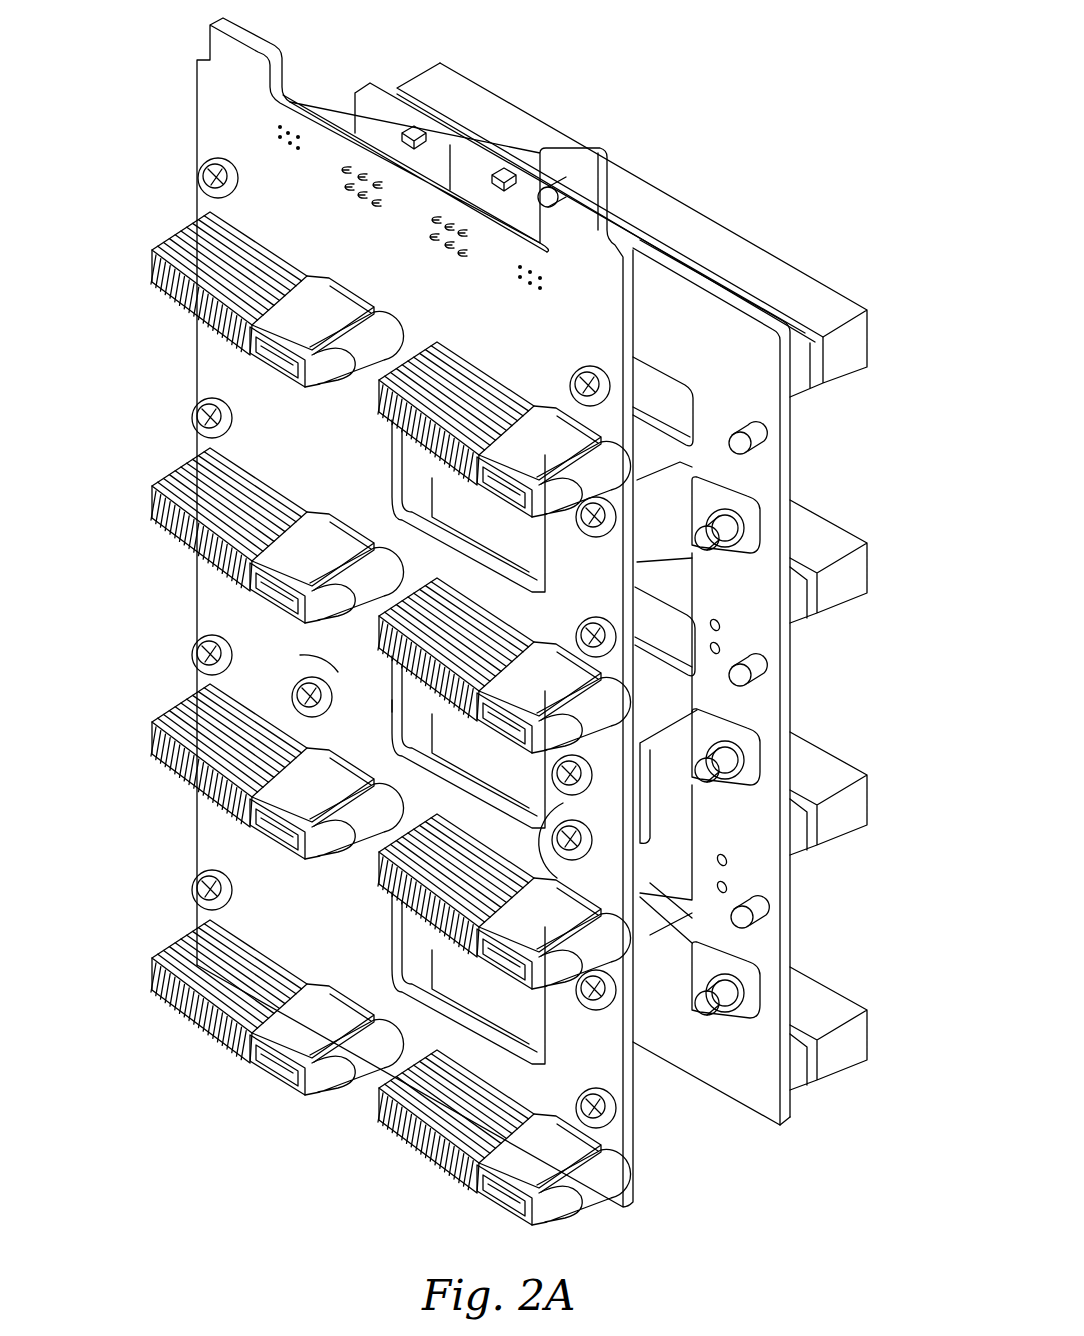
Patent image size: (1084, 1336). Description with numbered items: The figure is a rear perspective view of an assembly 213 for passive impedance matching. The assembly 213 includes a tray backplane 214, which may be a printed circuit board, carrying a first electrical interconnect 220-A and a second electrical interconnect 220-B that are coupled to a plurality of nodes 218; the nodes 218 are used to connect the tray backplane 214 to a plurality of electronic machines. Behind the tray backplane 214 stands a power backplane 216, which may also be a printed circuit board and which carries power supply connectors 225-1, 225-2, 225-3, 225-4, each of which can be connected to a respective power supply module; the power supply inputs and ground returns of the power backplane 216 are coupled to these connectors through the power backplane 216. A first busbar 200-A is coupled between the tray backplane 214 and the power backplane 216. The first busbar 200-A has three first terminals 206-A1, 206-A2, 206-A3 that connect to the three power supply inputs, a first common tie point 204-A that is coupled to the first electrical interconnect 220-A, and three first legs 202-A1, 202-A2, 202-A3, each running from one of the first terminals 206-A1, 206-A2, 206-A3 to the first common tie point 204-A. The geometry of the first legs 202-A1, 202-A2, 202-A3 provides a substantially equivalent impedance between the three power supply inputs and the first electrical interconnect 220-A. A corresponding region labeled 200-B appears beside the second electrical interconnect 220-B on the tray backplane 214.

The assembly 213 is at (140, 36).
The tray backplane 214 is at (481, 612).
The nodes 218 is at (153, 268).
The first electrical interconnect 220-A is at (582, 823).
The second electrical interconnect 220-B is at (326, 658).
The first busbar 200-A is at (710, 755).
The bracket 200-B is at (394, 704).
The first leg 202-A1 is at (676, 538).
The first leg 202-A2 is at (692, 810).
The first leg 202-A3 is at (678, 996).
The first common tie point 204-A is at (711, 682).
The first terminal 206-A1 is at (728, 530).
The first terminal 206-A2 is at (728, 762).
The first terminal 206-A3 is at (728, 995).
The power backplane 216 is at (743, 1083).
The power supply connector 225-1 is at (869, 561).
The power supply connector 225-2 is at (869, 793).
The power supply connector 225-3 is at (869, 1028).
The power supply connector 225-4 is at (672, 230).